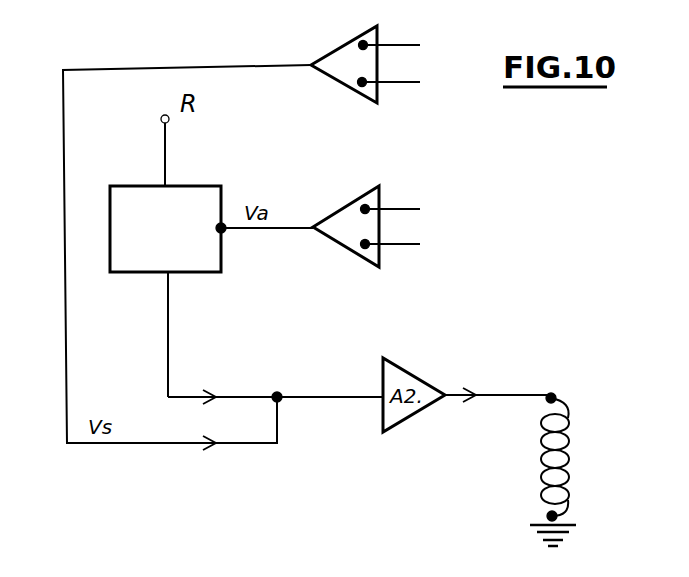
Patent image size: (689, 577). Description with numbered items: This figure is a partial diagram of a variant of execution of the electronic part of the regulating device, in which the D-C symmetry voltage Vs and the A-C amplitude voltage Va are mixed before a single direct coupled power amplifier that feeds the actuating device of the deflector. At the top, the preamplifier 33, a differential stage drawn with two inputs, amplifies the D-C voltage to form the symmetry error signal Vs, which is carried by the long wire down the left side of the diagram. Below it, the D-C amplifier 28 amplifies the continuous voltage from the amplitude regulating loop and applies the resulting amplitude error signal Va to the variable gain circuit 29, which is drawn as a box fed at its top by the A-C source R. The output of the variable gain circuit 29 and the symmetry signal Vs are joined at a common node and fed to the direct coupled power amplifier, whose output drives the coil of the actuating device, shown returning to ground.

The preamplifier 33 is at (365, 64).
The D-C amplifier 28 is at (366, 226).
The variable gain circuit 29 is at (168, 229).